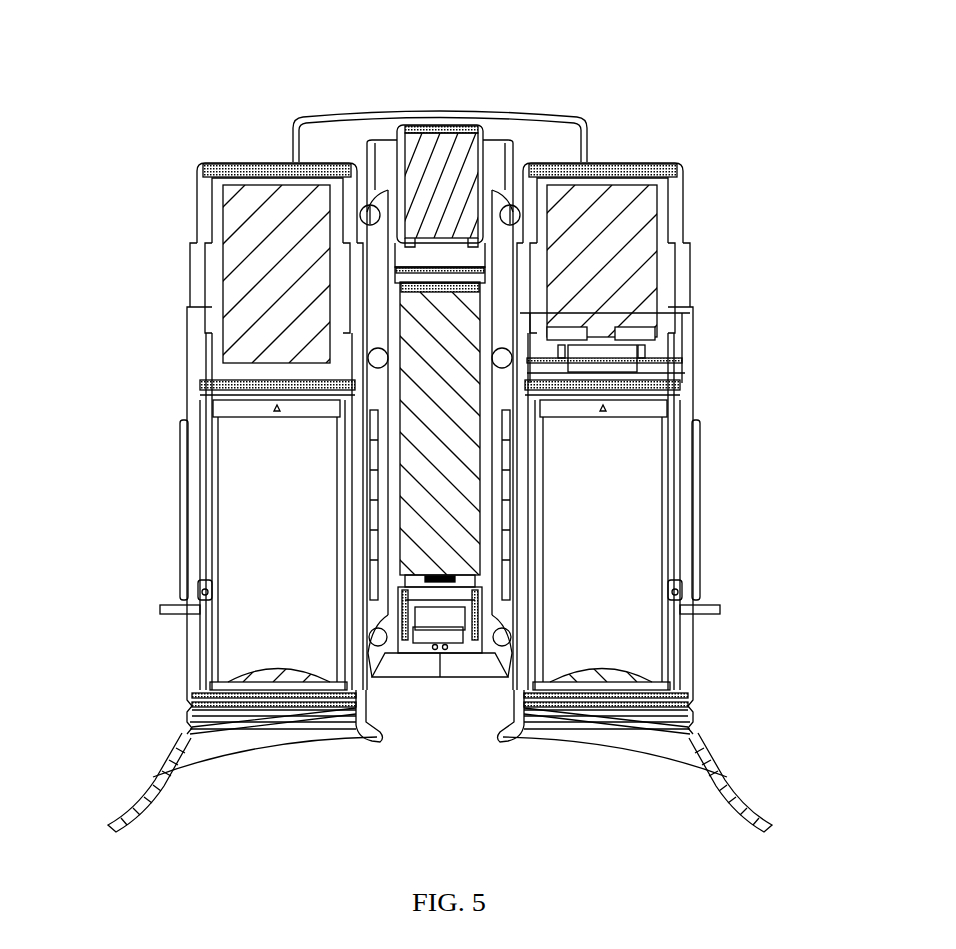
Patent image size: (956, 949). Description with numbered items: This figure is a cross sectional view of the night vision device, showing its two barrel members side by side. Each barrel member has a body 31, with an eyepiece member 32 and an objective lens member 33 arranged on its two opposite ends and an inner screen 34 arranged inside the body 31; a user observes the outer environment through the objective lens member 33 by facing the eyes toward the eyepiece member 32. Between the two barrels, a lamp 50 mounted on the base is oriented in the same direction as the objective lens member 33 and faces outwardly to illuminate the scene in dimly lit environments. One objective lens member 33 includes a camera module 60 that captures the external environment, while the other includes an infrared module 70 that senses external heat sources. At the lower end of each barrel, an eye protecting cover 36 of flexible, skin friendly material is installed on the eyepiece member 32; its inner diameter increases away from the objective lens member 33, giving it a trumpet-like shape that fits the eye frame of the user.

The body 31 is at (183, 452).
The eyepiece member 32 is at (685, 672).
The objective lens member 33 is at (620, 165).
The inner screen 34 is at (690, 372).
The eye protecting cover 36 is at (673, 748).
The lamp 50 is at (452, 152).
The camera module 60 is at (607, 253).
The infrared module 70 is at (288, 263).